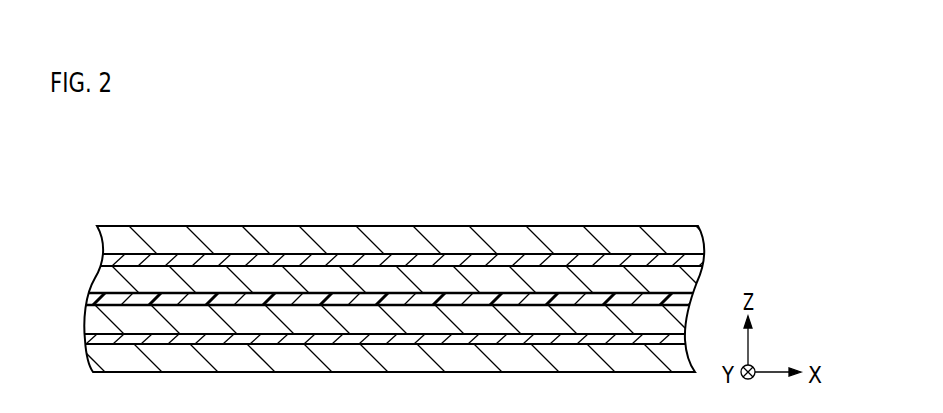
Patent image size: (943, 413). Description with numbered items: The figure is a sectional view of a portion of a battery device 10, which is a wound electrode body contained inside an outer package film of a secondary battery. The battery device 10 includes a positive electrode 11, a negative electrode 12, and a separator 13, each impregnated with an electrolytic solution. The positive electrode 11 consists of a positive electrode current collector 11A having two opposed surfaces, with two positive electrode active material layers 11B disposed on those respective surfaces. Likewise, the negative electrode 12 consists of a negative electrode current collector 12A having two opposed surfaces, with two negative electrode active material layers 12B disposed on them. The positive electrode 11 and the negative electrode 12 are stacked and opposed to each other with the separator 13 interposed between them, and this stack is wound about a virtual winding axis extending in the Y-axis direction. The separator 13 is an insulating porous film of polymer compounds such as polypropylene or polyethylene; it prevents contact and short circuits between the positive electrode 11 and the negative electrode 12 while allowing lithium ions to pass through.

The battery device 10 is at (718, 187).
The positive electrode 11 is at (333, 142).
The positive electrode current collector 11A is at (181, 263).
The positive electrode active material layers 11B is at (260, 278).
The negative electrode 12 is at (582, 142).
The negative electrode current collector 12A is at (420, 338).
The negative electrode active material layers 12B is at (490, 365).
The separator 13 is at (646, 300).